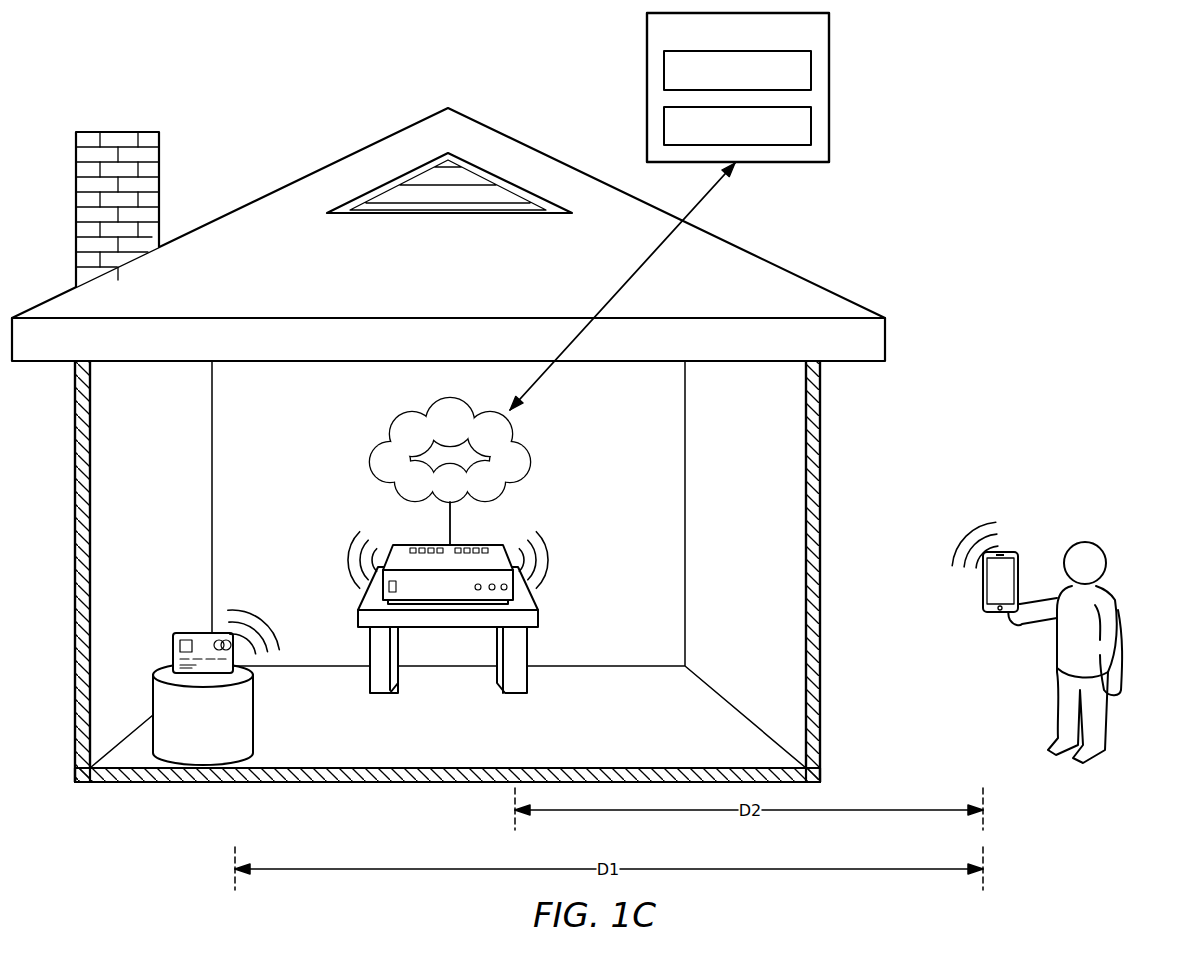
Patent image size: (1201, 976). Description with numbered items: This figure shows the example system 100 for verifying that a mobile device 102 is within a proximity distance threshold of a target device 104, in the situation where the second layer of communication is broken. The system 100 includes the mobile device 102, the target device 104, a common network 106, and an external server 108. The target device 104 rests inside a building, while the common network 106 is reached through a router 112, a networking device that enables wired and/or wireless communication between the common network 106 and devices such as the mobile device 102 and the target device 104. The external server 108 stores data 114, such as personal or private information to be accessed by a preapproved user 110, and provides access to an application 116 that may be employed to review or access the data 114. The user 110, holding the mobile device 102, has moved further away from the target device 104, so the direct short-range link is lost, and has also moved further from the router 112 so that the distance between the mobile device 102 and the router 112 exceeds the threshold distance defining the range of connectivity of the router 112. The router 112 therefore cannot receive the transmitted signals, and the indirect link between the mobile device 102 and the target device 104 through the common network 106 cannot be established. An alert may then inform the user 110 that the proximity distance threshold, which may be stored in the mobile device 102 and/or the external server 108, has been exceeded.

The system 100 is at (942, 76).
The mobile device 102 is at (992, 612).
The target device 104 is at (190, 632).
The common network 106 is at (450, 450).
The external server 108 is at (738, 87).
The user 110 is at (1108, 560).
The router 112 is at (422, 545).
The data 114 is at (737, 70).
The application 116 is at (737, 126).